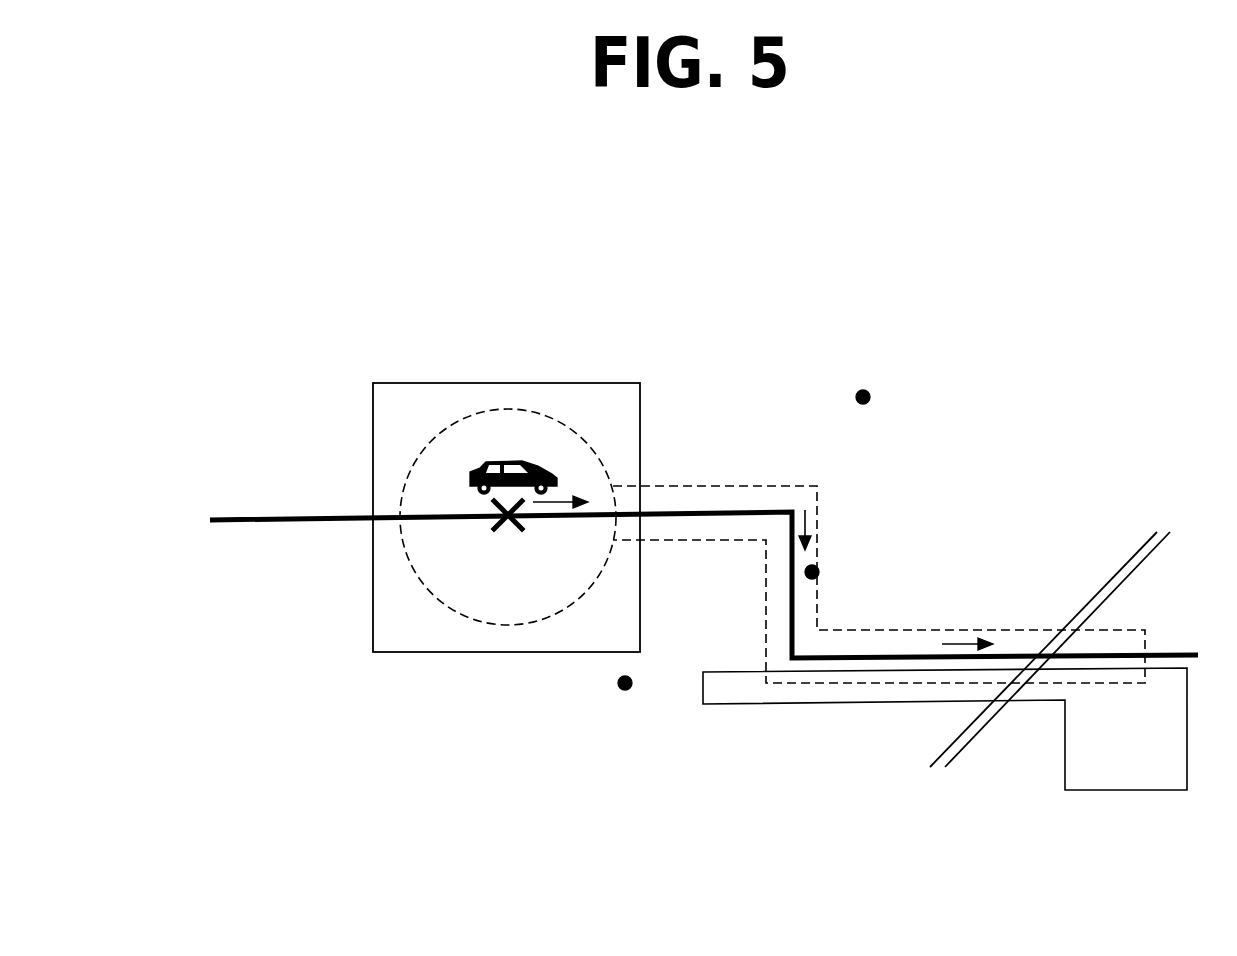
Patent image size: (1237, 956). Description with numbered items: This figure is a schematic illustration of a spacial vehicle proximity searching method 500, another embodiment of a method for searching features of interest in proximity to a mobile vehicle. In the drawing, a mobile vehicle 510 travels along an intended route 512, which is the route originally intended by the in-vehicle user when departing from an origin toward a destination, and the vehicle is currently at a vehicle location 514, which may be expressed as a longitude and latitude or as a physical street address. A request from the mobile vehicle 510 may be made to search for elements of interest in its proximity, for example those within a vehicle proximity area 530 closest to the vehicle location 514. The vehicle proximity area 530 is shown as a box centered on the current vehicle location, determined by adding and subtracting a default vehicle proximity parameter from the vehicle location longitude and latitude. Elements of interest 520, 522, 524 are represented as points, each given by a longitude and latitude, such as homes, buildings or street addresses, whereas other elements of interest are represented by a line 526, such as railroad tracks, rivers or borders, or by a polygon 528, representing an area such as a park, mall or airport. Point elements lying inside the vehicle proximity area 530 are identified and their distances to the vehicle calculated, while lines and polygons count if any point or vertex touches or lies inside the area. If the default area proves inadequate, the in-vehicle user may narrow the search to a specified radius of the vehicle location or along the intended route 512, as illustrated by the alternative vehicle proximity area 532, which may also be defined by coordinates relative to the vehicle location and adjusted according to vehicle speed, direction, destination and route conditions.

The spacial vehicle proximity searching method 500 is at (282, 237).
The mobile vehicle 510 is at (507, 458).
The intended route 512 is at (792, 510).
The vehicle location 514 is at (520, 528).
The element of interest 520 is at (863, 397).
The element of interest 522 is at (628, 690).
The element of interest 524 is at (817, 578).
The line 526 is at (1157, 532).
The polygon 528 is at (1065, 791).
The vehicle proximity area 530 is at (508, 382).
The alternative vehicle proximity area 532 is at (817, 483).